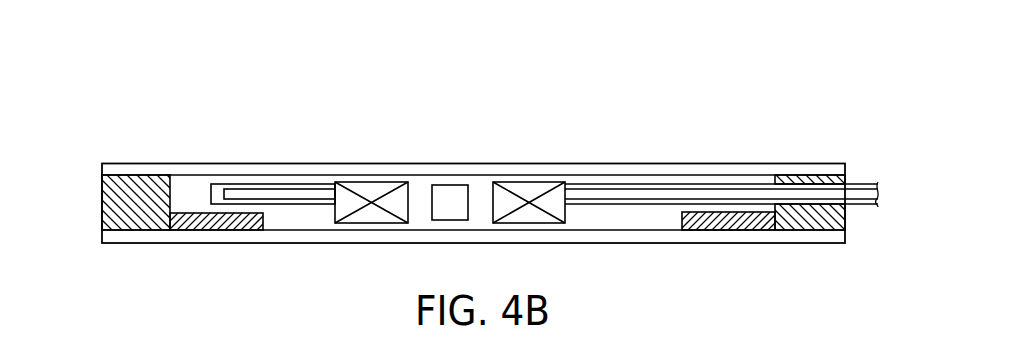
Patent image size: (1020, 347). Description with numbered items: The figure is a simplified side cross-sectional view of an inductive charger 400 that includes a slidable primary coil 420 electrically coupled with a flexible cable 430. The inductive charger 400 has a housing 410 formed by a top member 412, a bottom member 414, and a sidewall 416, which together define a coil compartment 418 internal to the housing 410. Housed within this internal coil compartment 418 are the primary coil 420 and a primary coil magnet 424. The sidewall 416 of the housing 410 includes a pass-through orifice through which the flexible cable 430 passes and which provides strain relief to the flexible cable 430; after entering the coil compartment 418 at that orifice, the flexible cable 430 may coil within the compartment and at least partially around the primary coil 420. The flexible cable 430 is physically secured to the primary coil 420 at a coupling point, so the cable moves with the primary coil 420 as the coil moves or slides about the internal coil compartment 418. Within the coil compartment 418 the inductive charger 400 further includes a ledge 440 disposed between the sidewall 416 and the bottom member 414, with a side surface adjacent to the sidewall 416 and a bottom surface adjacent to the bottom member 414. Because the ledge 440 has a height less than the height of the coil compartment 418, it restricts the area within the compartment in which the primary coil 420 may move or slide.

The inductive charger 400 is at (723, 102).
The housing 410 is at (102, 184).
The top member 412 is at (812, 163).
The bottom member 414 is at (820, 244).
The sidewall 416 is at (850, 177).
The coil compartment 418 is at (618, 230).
The primary coil 420 is at (530, 188).
The primary coil magnet 424 is at (438, 186).
The flexible cable 430 is at (295, 195).
The ledge 440 is at (219, 222).